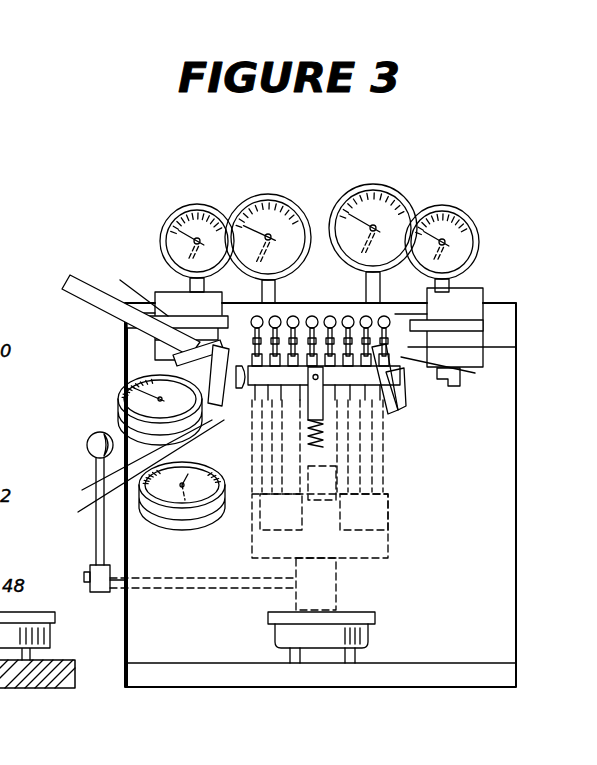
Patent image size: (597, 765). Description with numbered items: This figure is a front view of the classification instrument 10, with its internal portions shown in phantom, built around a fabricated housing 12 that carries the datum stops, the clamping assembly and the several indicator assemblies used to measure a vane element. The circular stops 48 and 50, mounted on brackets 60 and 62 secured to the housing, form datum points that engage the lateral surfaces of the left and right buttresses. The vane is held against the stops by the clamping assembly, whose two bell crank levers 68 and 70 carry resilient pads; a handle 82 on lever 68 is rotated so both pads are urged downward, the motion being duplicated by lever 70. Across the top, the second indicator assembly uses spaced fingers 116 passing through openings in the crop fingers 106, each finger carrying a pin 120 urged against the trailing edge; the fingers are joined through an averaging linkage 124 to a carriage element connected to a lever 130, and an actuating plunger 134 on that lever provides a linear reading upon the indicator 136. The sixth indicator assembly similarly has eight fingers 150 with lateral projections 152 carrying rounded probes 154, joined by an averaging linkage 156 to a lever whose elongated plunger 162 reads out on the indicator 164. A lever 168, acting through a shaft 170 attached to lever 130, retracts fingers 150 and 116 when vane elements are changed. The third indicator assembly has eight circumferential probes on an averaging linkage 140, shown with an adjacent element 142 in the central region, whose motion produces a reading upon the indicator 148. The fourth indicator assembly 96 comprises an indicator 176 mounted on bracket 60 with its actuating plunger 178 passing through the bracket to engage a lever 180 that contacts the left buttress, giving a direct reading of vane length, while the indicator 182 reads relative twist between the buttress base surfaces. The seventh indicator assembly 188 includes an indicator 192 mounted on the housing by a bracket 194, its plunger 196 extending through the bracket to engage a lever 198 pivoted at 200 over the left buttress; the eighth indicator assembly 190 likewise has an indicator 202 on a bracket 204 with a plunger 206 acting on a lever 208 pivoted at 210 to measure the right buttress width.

The classification instrument 10 is at (500, 200).
The housing 12 is at (518, 430).
The circular stop 48 is at (305, 446).
The circular stop 50 is at (393, 405).
The bracket 60 is at (209, 373).
The bracket 62 is at (404, 395).
The bell crank lever 68 is at (127, 358).
The bell crank lever 70 is at (452, 375).
The handle 82 is at (92, 300).
The fourth indicator assembly 96 is at (92, 438).
The crop fingers 106 is at (516, 347).
The fingers 116 is at (258, 480).
The pin 120 is at (346, 318).
The averaging linkage 124 is at (392, 548).
The lever 130 is at (338, 583).
The actuating plunger 134 is at (268, 305).
The indicator 136 is at (275, 194).
The averaging linkage 140 is at (372, 380).
The spring 142 is at (362, 422).
The indicator 148 is at (303, 640).
The fingers 150 is at (258, 316).
The lateral projection 152 is at (322, 316).
The rounded probe 154 is at (295, 316).
The averaging linkage 156 is at (392, 510).
The plunger 162 is at (380, 293).
The indicator 164 is at (370, 184).
The lever 168 is at (96, 463).
The shaft 170 is at (113, 595).
The indicator 176 is at (118, 398).
The actuating plunger 178 is at (126, 461).
The lever 180 is at (131, 475).
The indicator 182 is at (178, 510).
The seventh indicator assembly 188 is at (136, 257).
The eighth indicator assembly 190 is at (488, 264).
The indicator 192 is at (200, 204).
The bracket 194 is at (129, 288).
The plunger 196 is at (222, 318).
The lever 198 is at (127, 329).
The pivot 200 is at (127, 318).
The indicator 202 is at (445, 205).
The bracket 204 is at (455, 328).
The plunger 206 is at (443, 313).
The lever 208 is at (516, 304).
The pivot 210 is at (483, 323).